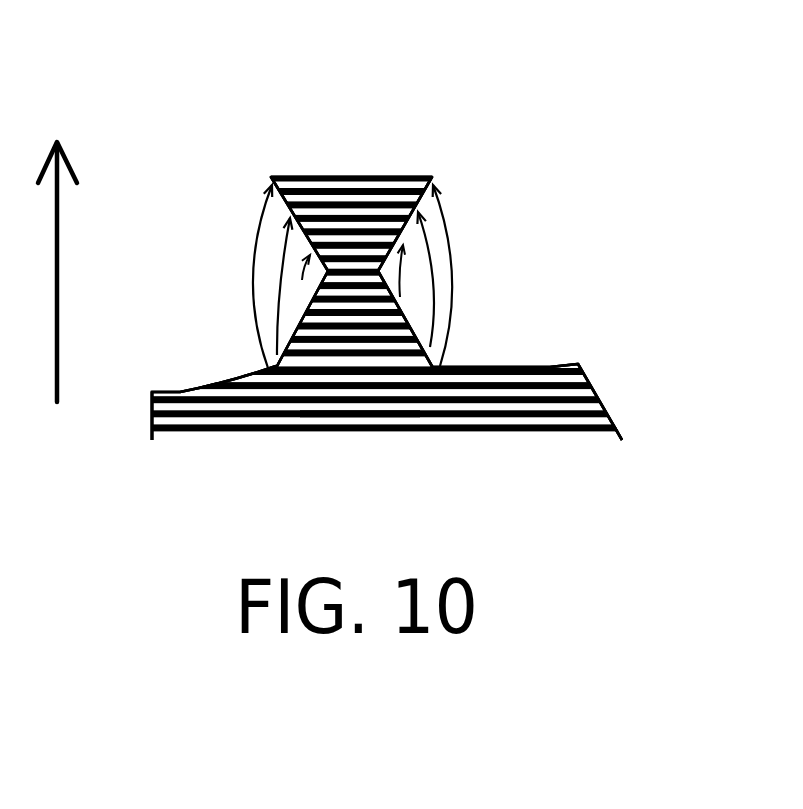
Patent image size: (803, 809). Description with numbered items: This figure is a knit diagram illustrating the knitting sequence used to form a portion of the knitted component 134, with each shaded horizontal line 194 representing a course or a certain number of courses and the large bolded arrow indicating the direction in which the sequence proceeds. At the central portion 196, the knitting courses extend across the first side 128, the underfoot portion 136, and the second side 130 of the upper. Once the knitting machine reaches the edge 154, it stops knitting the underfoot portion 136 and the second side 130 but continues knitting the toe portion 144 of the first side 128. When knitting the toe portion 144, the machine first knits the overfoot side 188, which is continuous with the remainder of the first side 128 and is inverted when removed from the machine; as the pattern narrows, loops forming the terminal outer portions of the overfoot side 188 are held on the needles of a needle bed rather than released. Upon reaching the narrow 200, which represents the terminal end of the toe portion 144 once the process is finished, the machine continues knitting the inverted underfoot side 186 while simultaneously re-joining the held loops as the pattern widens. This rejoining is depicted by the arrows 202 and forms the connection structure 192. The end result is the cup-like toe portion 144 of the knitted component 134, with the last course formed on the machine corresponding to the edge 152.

The knitted component 134 is at (205, 85).
The toe portion 144 is at (203, 242).
The edge 152 is at (332, 176).
The inverted underfoot side 186 is at (367, 198).
The overfoot side 188 is at (373, 323).
The narrow 200 is at (349, 273).
The connection structure 192 is at (387, 259).
The arrows 202 is at (445, 220).
The edge 154 is at (550, 367).
The second side 130 is at (587, 413).
The underfoot portion 136 is at (497, 423).
The first side 128 is at (258, 425).
The shaded horizontal line 194 is at (397, 413).
The central portion 196 is at (162, 427).